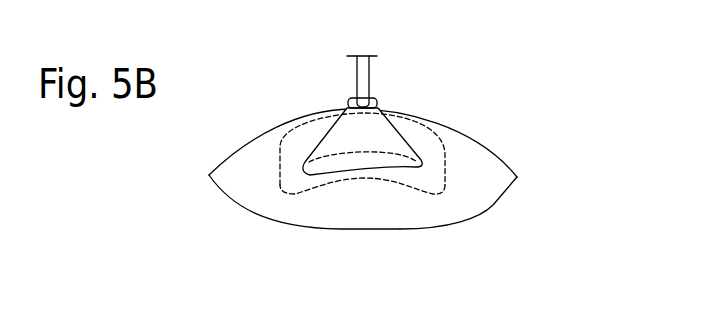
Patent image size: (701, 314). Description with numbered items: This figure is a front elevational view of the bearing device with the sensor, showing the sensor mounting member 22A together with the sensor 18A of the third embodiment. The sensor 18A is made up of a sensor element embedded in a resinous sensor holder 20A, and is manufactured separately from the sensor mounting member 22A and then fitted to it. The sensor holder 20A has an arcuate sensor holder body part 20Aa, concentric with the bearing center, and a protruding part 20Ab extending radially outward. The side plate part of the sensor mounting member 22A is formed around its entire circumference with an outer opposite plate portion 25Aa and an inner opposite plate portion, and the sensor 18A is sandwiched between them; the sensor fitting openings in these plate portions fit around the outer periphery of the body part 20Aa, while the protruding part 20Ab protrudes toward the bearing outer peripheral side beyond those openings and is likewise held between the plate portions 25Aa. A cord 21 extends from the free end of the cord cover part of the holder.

The sensor 18A is at (343, 140).
The cord 21 is at (363, 80).
The sensor holder 20A is at (316, 187).
The sensor holder body part 20Aa is at (396, 162).
The protruding part 20Ab is at (443, 163).
The sensor mounting member 22A is at (507, 160).
The outer opposite plate portion 25Aa is at (477, 187).